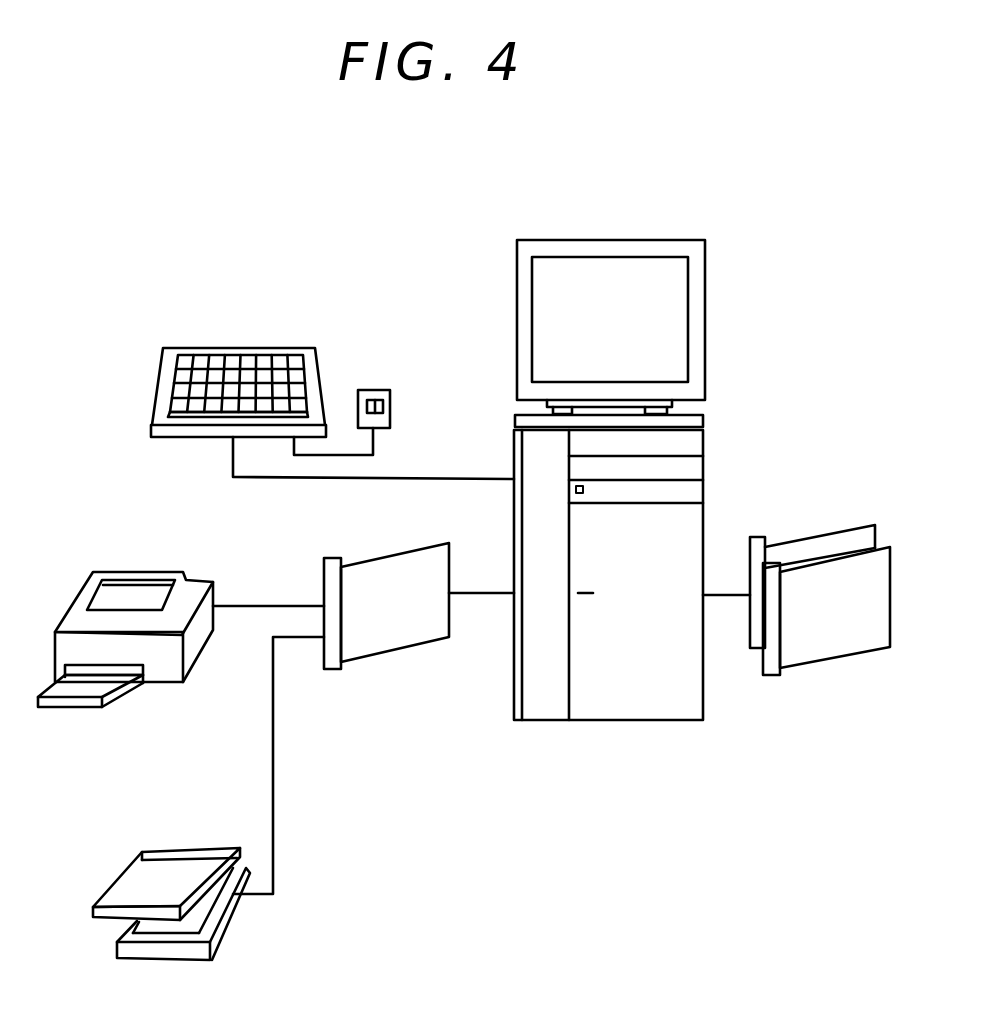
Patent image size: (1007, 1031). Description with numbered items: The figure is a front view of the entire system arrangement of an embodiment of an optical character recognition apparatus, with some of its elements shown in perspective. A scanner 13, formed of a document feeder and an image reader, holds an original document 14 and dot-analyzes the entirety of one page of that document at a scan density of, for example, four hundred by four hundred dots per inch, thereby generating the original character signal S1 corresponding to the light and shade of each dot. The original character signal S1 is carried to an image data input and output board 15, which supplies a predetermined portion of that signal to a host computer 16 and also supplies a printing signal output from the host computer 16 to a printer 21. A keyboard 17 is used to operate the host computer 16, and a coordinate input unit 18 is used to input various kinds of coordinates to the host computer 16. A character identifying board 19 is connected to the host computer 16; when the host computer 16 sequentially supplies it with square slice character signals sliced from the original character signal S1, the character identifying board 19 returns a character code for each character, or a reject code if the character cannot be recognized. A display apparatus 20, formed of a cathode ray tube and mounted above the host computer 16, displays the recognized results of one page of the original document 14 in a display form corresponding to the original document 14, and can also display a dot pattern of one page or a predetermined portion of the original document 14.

The scanner 13 is at (223, 920).
The original document 14 is at (127, 925).
The image data input and output board 15 is at (398, 652).
The host computer 16 is at (637, 720).
The keyboard 17 is at (185, 347).
The coordinate input unit 18 is at (375, 390).
The character identifying board 19 is at (810, 537).
The display apparatus 20 is at (705, 307).
The printer 21 is at (167, 675).
The original character signal S1 is at (273, 858).